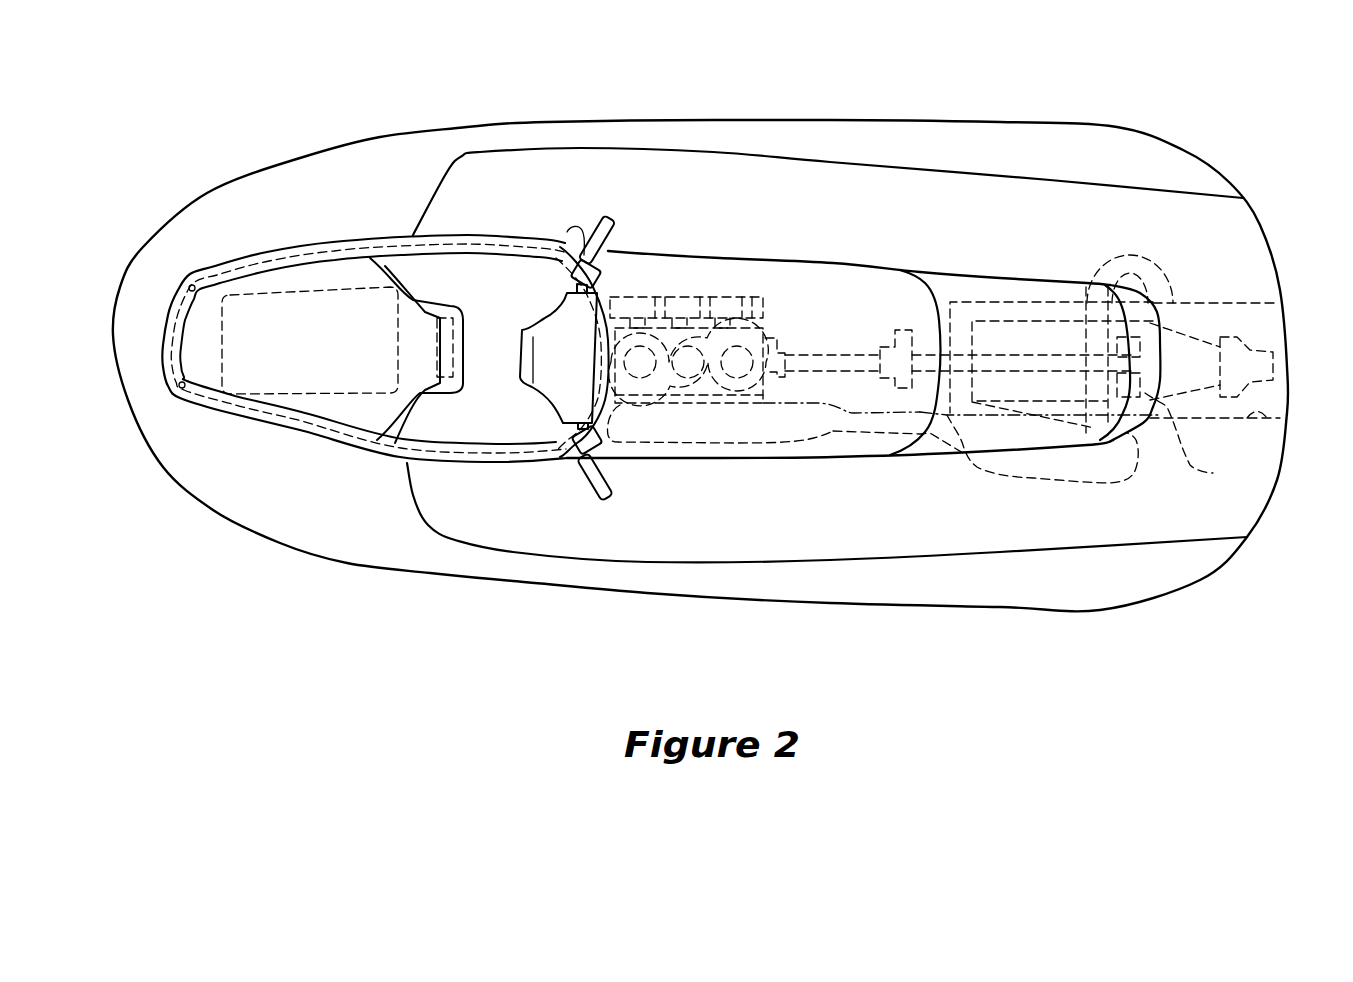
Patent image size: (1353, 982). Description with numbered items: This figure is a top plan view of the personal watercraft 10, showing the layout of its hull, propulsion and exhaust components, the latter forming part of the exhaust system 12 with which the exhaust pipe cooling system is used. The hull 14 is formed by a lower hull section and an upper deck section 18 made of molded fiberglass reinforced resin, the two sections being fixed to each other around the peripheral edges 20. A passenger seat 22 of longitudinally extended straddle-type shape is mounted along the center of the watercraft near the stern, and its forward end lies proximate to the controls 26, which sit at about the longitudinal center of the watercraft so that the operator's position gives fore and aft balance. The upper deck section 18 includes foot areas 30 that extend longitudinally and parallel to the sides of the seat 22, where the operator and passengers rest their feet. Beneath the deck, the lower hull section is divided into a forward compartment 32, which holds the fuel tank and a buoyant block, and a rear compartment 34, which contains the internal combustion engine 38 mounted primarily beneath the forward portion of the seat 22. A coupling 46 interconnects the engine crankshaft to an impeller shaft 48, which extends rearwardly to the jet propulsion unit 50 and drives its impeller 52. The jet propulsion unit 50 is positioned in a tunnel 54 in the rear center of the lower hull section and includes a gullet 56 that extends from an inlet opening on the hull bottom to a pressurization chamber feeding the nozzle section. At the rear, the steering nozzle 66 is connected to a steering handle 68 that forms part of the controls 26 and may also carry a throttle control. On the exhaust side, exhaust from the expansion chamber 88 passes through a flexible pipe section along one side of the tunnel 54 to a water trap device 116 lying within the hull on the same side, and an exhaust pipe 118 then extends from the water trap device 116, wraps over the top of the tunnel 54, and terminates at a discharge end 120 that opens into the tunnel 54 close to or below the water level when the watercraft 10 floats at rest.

The personal watercraft 10 is at (721, 327).
The exhaust system 12 is at (936, 443).
The hull 14 is at (873, 434).
The upper deck section 18 is at (213, 232).
The peripheral edges 20 is at (140, 263).
The passenger seat 22 is at (807, 460).
The controls 26 is at (549, 223).
The foot areas 30 is at (870, 215).
The forward compartment 32 is at (297, 195).
The rear compartment 34 is at (755, 262).
The internal combustion engine 38 is at (696, 293).
The coupling 46 is at (766, 330).
The impeller shaft 48 is at (833, 354).
The jet propulsion unit 50 is at (1033, 298).
The impeller 52 is at (1199, 439).
The tunnel 54 is at (1268, 422).
The gullet 56 is at (995, 320).
The steering nozzle 66 is at (1252, 348).
The steering handle 68 is at (612, 234).
The expansion chamber 88 is at (719, 445).
The water trap device 116 is at (1030, 478).
The exhaust pipe 118 is at (1130, 255).
The discharge end 120 is at (1157, 310).